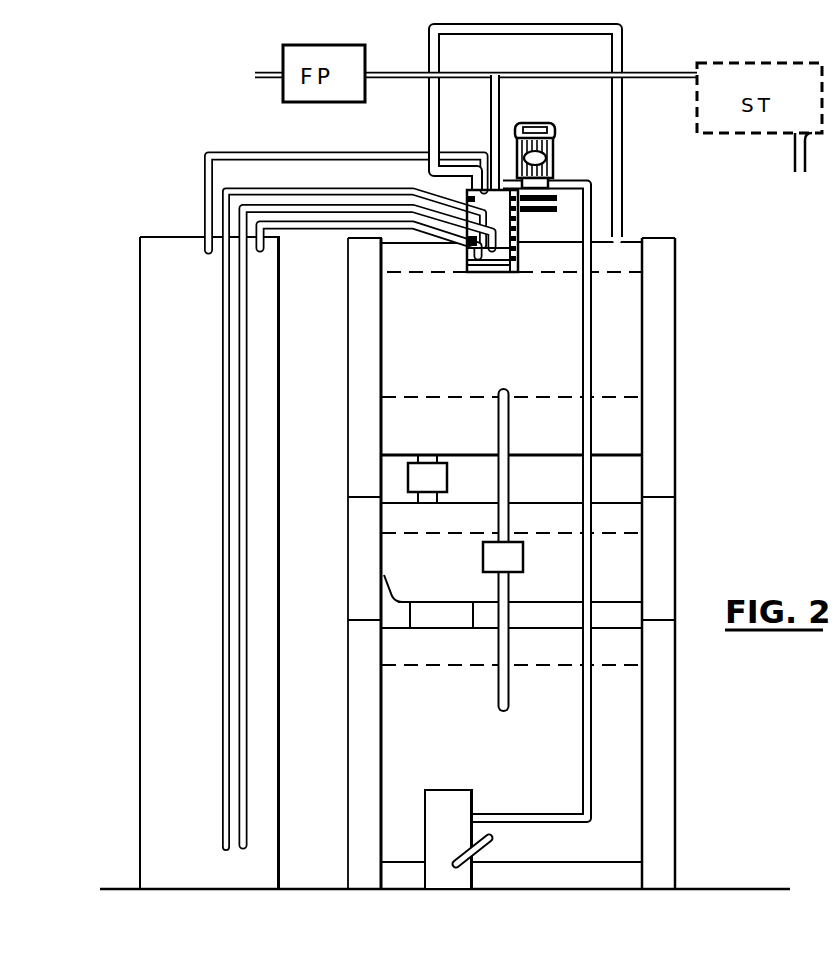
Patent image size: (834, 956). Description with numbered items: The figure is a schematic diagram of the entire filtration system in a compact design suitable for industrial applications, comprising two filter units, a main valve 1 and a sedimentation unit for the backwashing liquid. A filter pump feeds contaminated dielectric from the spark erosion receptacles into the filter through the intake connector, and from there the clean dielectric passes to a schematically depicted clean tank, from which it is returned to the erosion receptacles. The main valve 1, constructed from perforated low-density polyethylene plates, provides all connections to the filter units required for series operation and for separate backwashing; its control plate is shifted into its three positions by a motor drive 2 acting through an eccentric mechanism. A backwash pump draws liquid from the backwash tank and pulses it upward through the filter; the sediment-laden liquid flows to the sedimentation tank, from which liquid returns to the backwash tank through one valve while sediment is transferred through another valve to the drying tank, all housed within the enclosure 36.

The main valve 1 is at (520, 232).
The motor drive 2 is at (558, 165).
The tank 36 is at (164, 538).